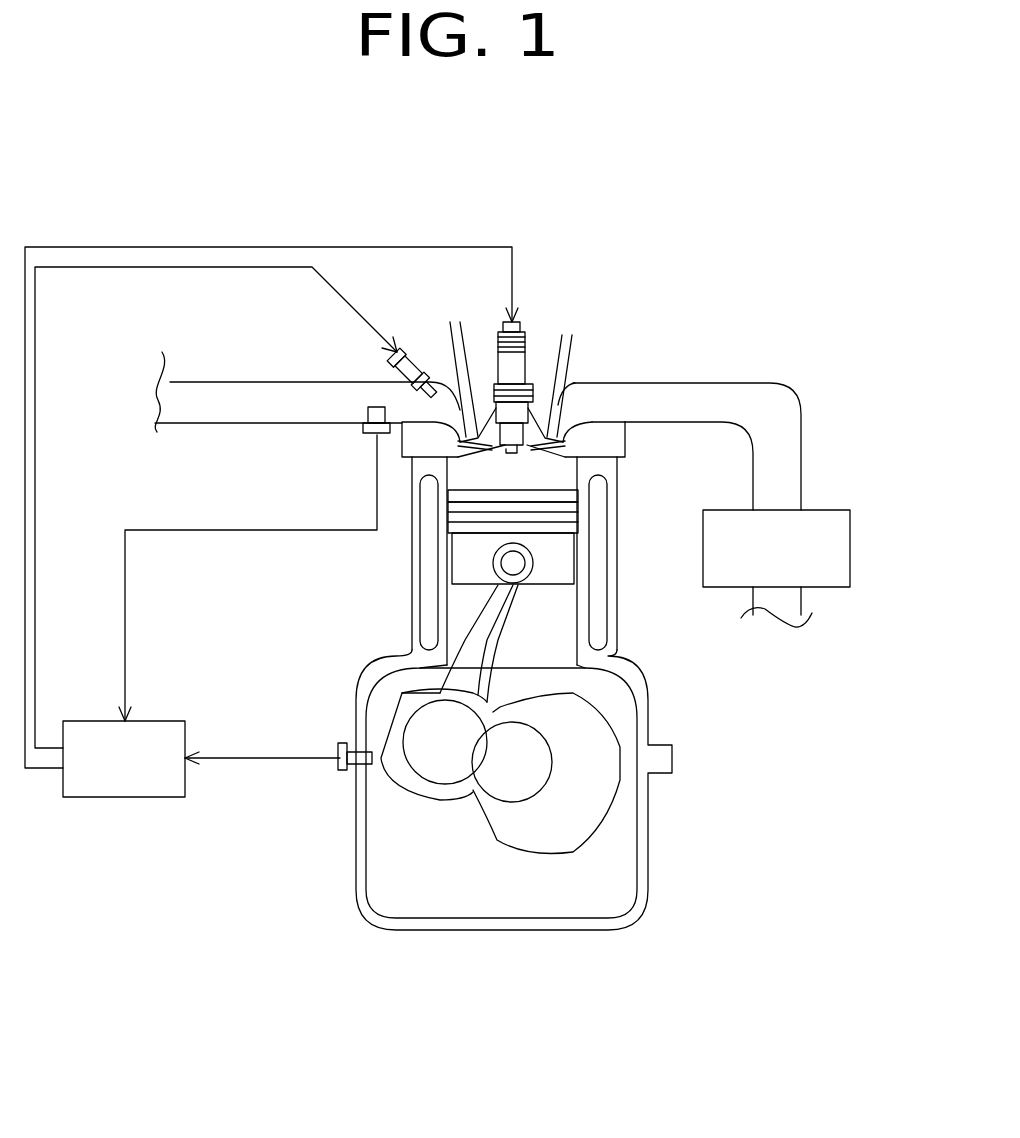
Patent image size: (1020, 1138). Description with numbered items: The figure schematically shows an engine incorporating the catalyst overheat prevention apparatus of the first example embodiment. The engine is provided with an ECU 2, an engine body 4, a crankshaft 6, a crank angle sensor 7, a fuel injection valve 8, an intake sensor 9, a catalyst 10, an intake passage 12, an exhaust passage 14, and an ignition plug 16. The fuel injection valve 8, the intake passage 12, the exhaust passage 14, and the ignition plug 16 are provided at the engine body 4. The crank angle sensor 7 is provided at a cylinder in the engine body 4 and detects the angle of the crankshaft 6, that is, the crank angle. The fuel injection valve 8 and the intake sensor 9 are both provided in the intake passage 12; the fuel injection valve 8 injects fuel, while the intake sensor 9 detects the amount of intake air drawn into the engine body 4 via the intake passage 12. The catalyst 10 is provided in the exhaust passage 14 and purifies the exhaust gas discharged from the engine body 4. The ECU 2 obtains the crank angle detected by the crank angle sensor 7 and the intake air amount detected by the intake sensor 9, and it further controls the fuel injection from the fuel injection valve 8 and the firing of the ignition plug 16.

The ECU 2 is at (78, 797).
The engine body 4 is at (697, 725).
The crankshaft 6 is at (428, 712).
The crank angle sensor 7 is at (340, 775).
The fuel injection valve 8 is at (410, 347).
The intake sensor 9 is at (367, 437).
The catalyst 10 is at (852, 548).
The intake passage 12 is at (207, 425).
The exhaust passage 14 is at (688, 422).
The ignition plug 16 is at (525, 330).